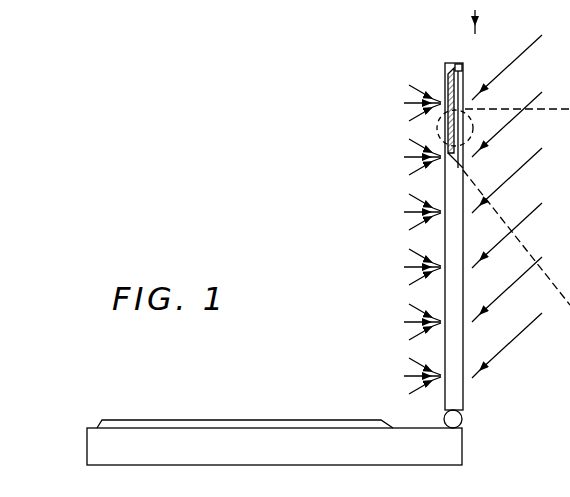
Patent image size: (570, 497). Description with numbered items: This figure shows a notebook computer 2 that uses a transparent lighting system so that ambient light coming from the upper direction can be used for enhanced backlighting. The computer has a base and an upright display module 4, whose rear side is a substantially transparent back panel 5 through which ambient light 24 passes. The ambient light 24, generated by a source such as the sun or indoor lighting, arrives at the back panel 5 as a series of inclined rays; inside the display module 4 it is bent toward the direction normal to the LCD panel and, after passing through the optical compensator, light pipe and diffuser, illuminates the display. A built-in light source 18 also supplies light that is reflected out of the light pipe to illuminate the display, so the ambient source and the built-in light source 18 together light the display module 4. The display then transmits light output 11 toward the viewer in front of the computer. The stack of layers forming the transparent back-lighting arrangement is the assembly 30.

The notebook computer 2 is at (274, 417).
The display module 4 is at (426, 99).
The transparent back panel 5 is at (503, 235).
The light output 11 is at (391, 235).
The built-in light source 18 is at (441, 48).
The ambient light 24 is at (507, 196).
The assembly 30 is at (461, 17).